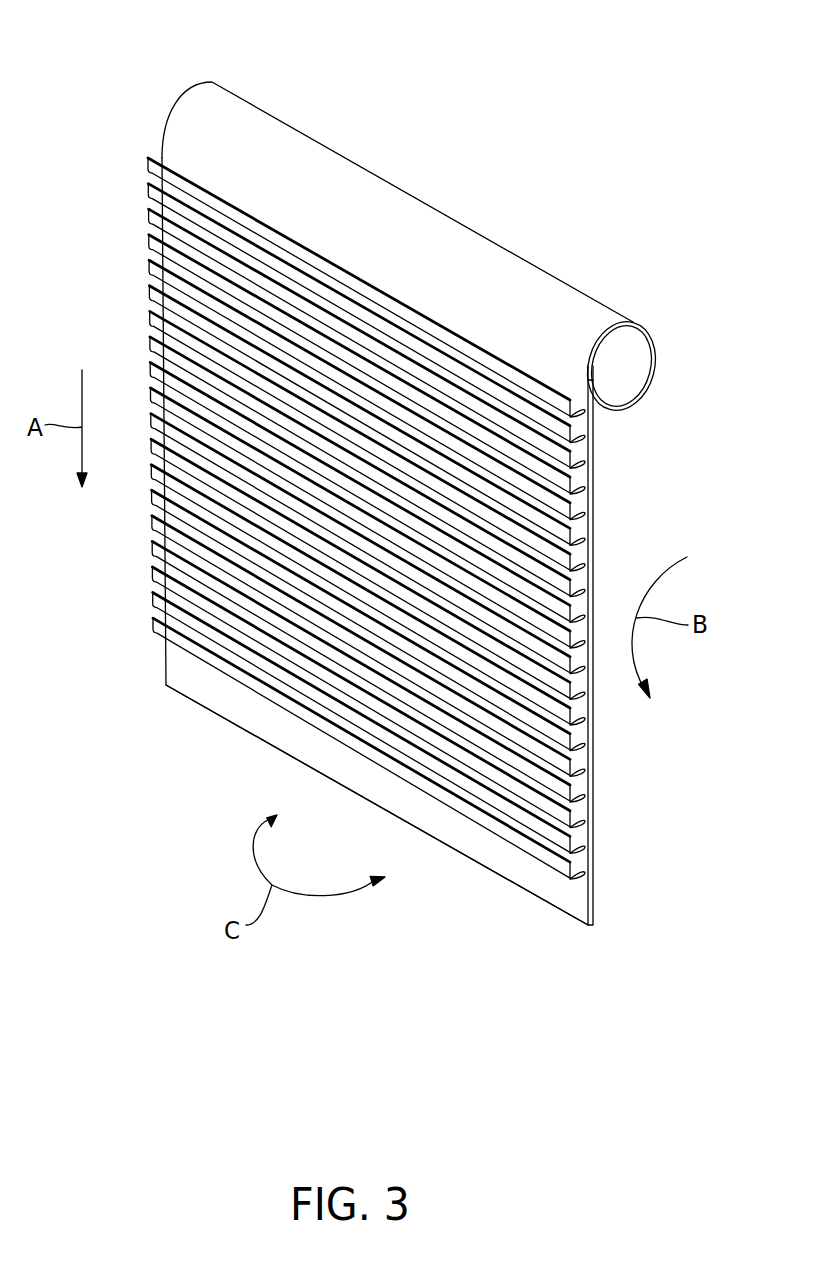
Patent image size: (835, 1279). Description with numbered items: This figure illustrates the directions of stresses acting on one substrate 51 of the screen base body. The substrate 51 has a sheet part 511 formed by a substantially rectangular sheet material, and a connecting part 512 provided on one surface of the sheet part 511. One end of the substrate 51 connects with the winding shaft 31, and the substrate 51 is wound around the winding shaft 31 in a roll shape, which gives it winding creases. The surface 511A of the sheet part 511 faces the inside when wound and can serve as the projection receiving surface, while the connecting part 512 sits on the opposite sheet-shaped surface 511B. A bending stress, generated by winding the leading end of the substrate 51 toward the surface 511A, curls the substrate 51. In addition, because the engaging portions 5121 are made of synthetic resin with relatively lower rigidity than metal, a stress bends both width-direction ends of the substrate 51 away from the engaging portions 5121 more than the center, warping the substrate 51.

The substrate 51 is at (369, 467).
The connecting part 512 is at (128, 92).
The engaging portions 5121 is at (147, 165).
The winding shaft 31 is at (633, 363).
The sheet part 511 is at (435, 542).
The surface 511A is at (597, 796).
The sheet-shaped surface 511B is at (577, 903).